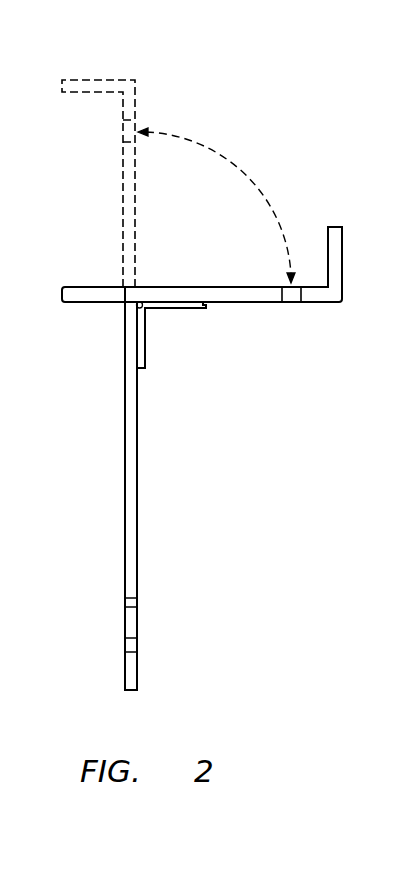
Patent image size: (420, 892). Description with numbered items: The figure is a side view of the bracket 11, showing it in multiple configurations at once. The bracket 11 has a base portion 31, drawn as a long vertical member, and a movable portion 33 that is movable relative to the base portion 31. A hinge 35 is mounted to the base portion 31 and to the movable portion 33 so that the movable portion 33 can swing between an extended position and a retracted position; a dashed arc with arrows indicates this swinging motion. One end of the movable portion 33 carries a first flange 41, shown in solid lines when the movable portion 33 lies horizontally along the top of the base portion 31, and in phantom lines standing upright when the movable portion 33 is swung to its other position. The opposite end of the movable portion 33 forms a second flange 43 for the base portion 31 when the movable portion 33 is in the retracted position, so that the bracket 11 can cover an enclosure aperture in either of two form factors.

The bracket 11 is at (285, 113).
The base portion 31 is at (124, 525).
The movable portion 33 is at (122, 202).
The hinge 35 is at (147, 350).
The first flange 41 is at (80, 80).
The second flange 43 is at (82, 287).